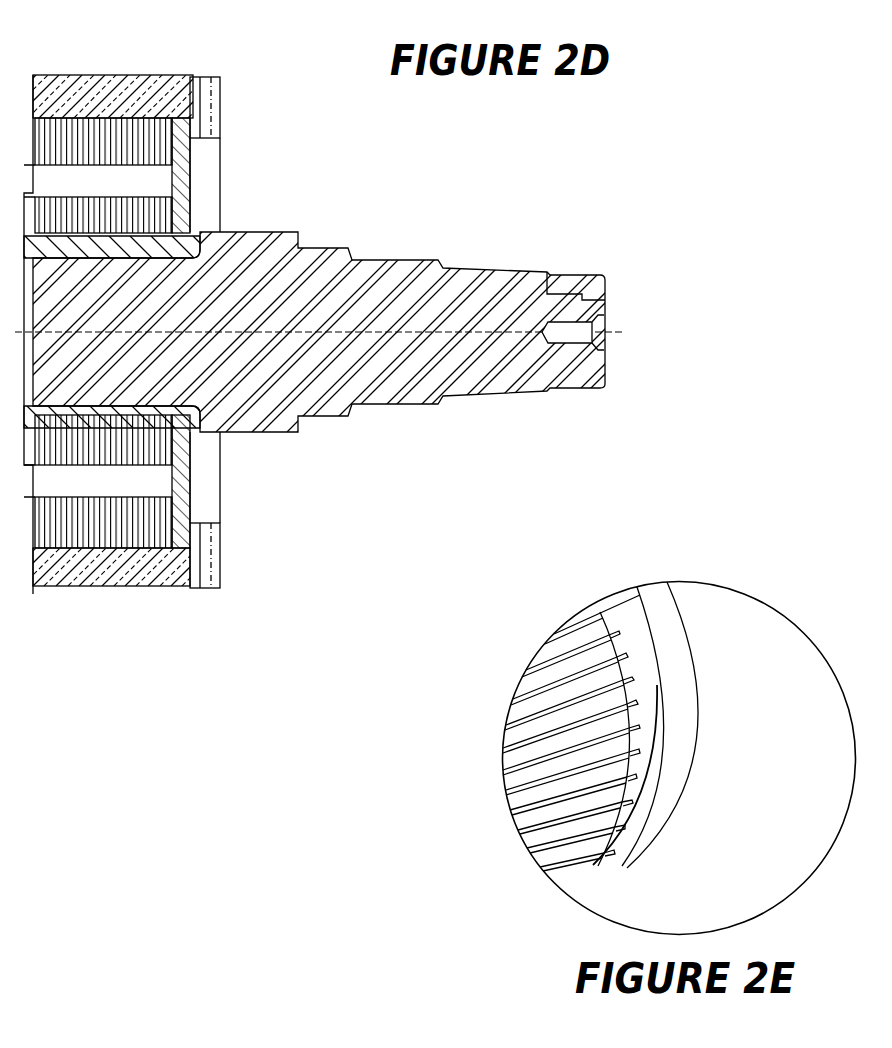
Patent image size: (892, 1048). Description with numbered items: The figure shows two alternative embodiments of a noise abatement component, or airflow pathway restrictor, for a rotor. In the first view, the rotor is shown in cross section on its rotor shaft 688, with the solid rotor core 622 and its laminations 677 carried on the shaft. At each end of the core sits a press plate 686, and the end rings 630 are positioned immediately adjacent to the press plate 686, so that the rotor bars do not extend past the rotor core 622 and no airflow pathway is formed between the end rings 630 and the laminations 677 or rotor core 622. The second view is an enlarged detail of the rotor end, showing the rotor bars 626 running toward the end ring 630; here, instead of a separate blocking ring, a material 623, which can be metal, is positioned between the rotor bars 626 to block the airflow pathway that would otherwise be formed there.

In FIG. 2D, the rotor core 622 is at (86, 75).
In FIG. 2D, the laminations 677 is at (158, 114).
In FIG. 2D, the end rings 630 is at (205, 77).
In FIG. 2E, the end rings 630 is at (676, 656).
In FIG. 2D, the press plate 686 is at (197, 148).
In FIG. 2D, the rotor shaft 688 is at (398, 262).
In FIG. 2E, the material 623 is at (655, 707).
In FIG. 2E, the rotor bars 626 is at (658, 690).